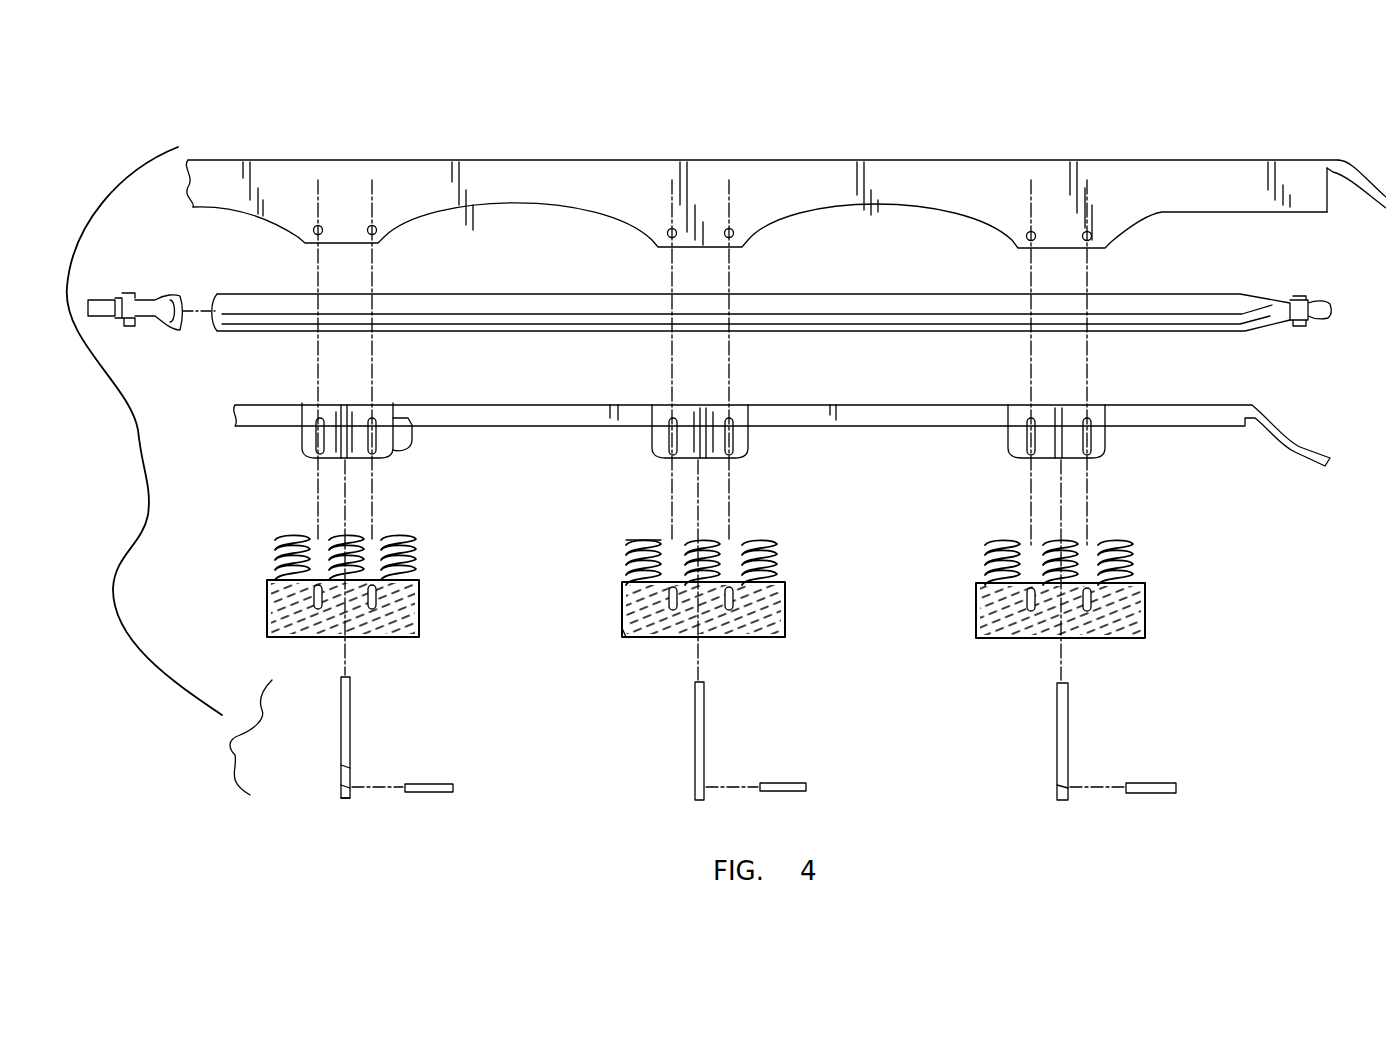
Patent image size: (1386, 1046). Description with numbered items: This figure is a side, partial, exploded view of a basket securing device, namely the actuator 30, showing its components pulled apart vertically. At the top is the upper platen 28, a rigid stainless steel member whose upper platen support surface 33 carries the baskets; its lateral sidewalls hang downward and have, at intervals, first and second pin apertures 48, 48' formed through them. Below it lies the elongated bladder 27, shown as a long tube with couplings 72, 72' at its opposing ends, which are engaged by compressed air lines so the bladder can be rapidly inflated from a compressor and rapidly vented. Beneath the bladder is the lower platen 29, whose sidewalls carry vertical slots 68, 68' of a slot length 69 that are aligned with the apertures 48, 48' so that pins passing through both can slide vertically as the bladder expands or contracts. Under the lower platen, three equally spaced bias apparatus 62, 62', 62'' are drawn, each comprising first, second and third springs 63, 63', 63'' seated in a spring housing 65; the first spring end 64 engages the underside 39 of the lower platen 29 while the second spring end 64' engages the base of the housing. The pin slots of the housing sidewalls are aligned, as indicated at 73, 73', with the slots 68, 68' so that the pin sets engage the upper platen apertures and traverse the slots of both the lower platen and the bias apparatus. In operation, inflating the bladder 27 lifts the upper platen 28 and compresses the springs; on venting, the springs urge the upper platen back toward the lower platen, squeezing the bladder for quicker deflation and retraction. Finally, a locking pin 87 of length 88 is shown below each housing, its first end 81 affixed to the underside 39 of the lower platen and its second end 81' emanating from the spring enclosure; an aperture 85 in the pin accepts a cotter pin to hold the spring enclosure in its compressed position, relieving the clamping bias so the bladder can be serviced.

The upper platen support surface 33 is at (568, 152).
The upper platen 28 is at (940, 160).
The first pin aperture 48 is at (618, 248).
The second pin aperture 48' is at (730, 254).
The elongated bladder 27 is at (837, 303).
The coupling 72 is at (151, 335).
The coupling 72' is at (1305, 342).
The actuator 30 is at (138, 463).
The lower platen 29 is at (912, 405).
The vertical slot 68 is at (292, 443).
The vertical slot 68' is at (387, 409).
The slot length 69 is at (412, 440).
The underside of the lower platen 39 is at (638, 441).
The alignment of pin slots 73 is at (624, 360).
The alignment of pin slots 73' is at (776, 360).
The first spring 63 is at (614, 541).
The second spring 63' is at (742, 528).
The third spring 63'' is at (805, 536).
The first spring end 64 is at (594, 549).
The second spring end 64' is at (583, 633).
The bias apparatus 62 is at (746, 570).
The bias apparatus 62' is at (381, 427).
The bias apparatus 62'' is at (1121, 430).
The spring housing 65 is at (740, 640).
The first end of locking pin 81 is at (704, 733).
The second end of locking pin 81' is at (306, 829).
The locking pin 87 is at (352, 736).
The aperture 85 is at (355, 762).
The locking pin length 88 is at (240, 737).